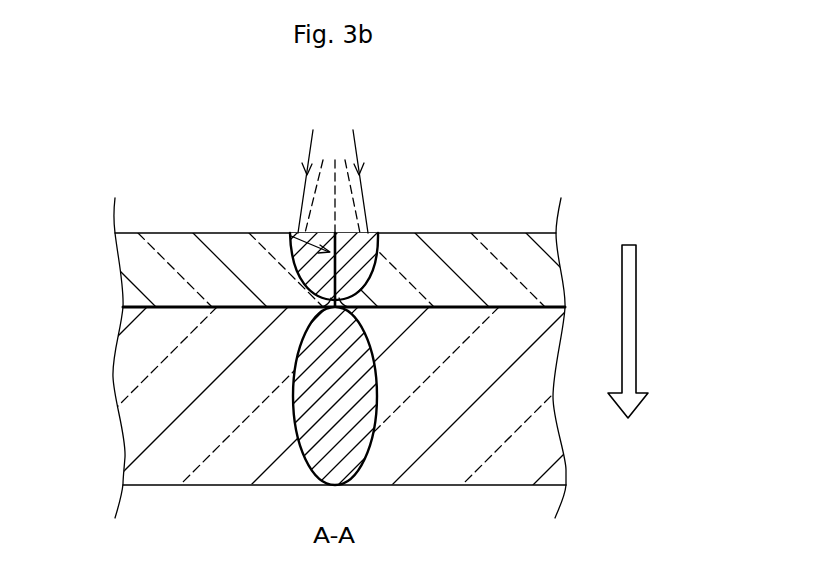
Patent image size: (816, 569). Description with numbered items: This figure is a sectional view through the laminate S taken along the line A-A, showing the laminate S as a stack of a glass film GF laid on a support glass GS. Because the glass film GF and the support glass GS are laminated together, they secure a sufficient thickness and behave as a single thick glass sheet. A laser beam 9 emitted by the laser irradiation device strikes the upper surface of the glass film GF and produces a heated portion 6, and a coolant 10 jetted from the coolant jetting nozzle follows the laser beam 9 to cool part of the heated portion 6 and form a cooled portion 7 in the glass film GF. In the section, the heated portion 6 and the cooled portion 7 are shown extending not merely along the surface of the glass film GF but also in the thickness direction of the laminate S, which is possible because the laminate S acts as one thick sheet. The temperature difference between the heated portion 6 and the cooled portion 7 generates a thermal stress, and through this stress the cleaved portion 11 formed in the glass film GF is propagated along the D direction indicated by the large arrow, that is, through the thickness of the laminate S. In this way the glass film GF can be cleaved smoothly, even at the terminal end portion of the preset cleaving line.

The heated portion 6 is at (292, 396).
The cooled portion 7 is at (293, 263).
The laser beam 9 is at (357, 149).
The coolant 10 is at (355, 197).
The cleaved portion 11 is at (291, 235).
The glass film GF is at (181, 250).
The support glass GS is at (444, 458).
The laminate S is at (482, 212).
The D direction D is at (633, 331).